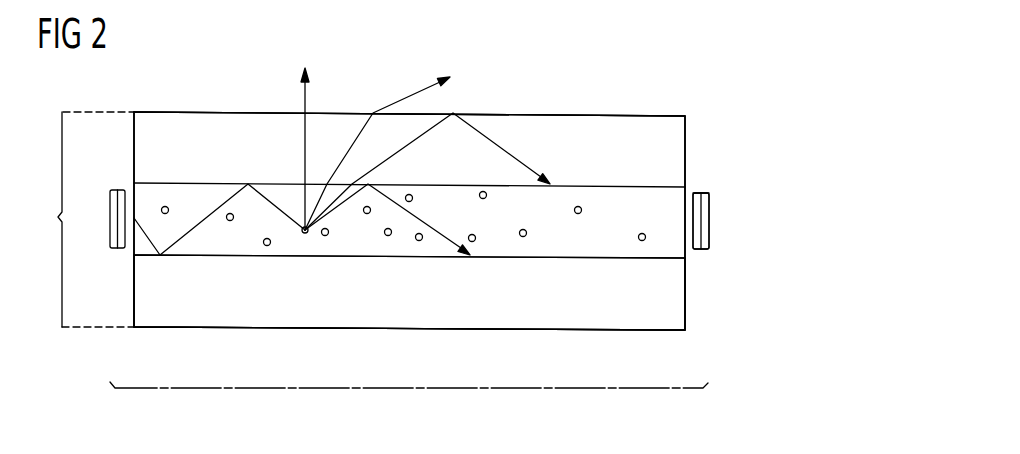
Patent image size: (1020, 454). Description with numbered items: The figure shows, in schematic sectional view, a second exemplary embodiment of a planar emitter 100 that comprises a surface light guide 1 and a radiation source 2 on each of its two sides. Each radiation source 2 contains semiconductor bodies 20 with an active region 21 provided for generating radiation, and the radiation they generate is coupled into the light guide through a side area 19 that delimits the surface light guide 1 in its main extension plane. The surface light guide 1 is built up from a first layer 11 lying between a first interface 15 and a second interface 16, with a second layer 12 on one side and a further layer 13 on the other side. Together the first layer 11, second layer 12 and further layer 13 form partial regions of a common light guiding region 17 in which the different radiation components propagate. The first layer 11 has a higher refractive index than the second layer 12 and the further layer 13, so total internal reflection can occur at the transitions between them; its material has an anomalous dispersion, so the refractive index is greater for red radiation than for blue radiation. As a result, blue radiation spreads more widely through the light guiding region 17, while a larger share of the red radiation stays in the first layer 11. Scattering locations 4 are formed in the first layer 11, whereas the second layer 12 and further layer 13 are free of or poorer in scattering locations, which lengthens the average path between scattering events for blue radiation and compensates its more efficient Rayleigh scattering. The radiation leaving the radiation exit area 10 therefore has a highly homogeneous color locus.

The surface light guide 1 is at (646, 90).
The radiation source 2 is at (110, 220).
The scattering locations 4 is at (638, 238).
The radiation exit area 10 is at (573, 114).
The first layer 11 is at (684, 256).
The second layer 12 is at (212, 118).
The further layer 13 is at (689, 297).
The first interface 15 is at (500, 113).
The second interface 16 is at (408, 329).
The light guiding region 17 is at (83, 219).
The side area 19 is at (134, 169).
The semiconductor body 20 is at (710, 210).
The active region 21 is at (700, 193).
The planar emitter 100 is at (409, 405).